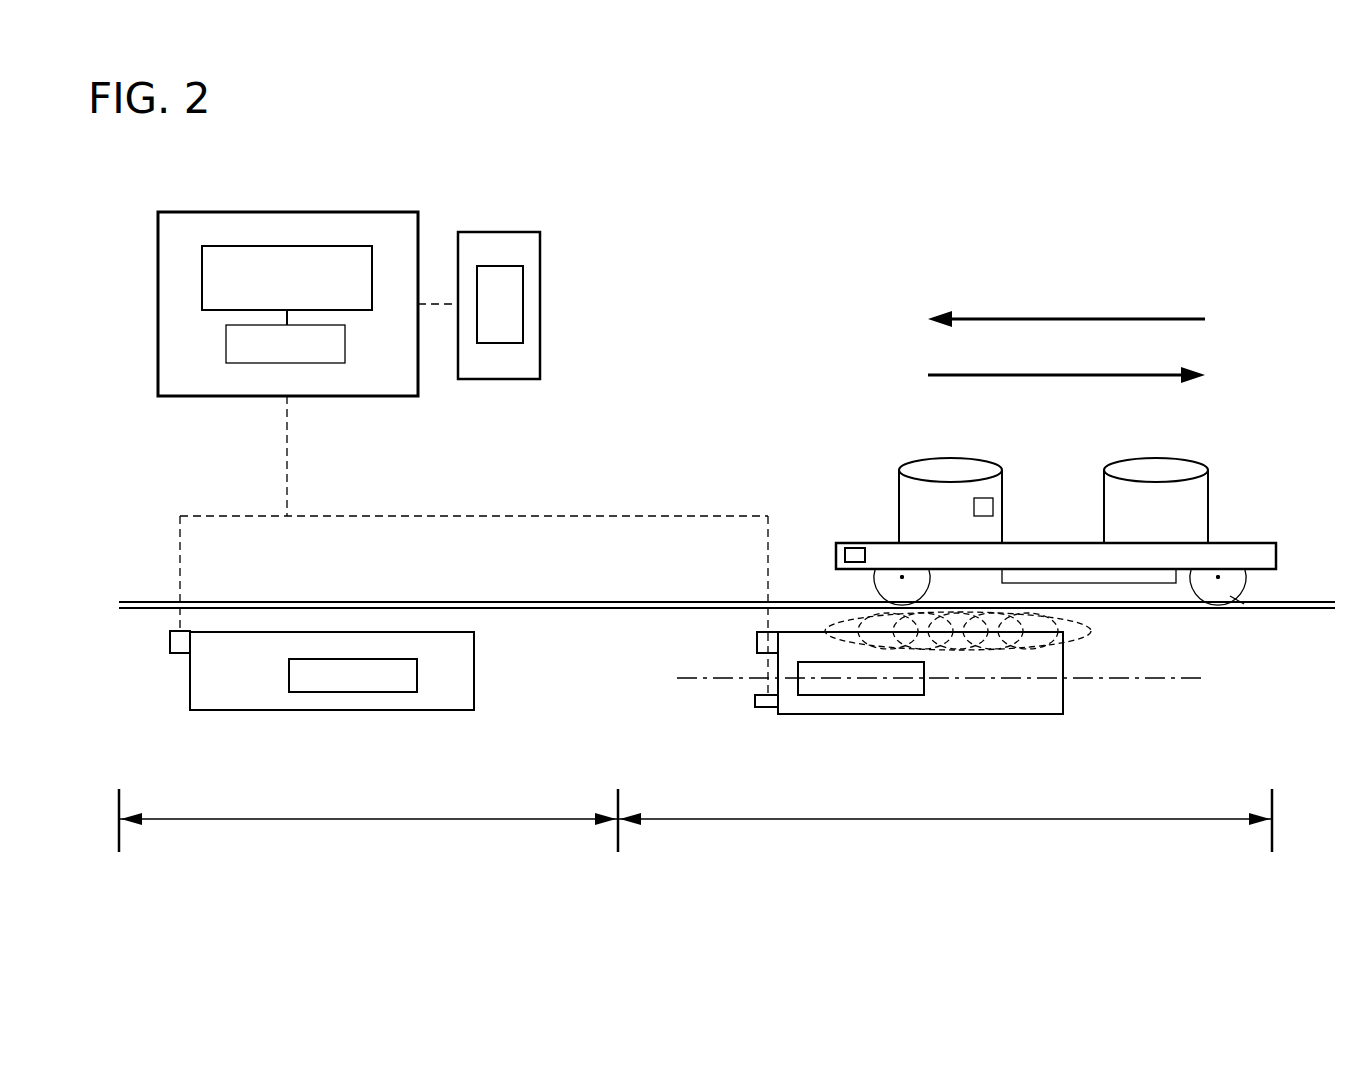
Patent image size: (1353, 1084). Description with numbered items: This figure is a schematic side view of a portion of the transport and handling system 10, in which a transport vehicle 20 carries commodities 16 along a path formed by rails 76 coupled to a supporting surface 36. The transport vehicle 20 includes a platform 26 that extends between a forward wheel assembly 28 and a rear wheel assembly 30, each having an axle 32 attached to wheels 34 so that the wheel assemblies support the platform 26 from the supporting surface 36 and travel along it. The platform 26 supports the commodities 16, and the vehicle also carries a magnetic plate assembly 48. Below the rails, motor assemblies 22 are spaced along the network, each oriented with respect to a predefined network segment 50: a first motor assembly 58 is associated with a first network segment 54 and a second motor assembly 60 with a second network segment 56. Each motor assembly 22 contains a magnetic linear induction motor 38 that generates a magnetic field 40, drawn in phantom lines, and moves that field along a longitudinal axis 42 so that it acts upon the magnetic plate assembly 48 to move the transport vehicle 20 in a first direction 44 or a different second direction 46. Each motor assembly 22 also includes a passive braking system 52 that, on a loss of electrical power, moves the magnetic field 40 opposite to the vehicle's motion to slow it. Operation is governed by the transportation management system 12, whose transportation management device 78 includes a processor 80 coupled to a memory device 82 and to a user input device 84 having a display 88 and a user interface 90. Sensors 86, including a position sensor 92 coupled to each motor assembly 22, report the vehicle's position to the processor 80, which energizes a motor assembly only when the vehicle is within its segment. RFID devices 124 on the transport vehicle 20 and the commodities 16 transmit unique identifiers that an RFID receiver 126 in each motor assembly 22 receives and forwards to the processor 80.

The transport and handling system 10 is at (1054, 188).
The transportation management system 12 is at (499, 174).
The commodities 16 is at (1002, 482).
The transport vehicle 20 is at (1238, 543).
The motor assembly 22 is at (377, 710).
The platform 26 is at (1276, 550).
The forward wheel assembly 28 is at (877, 582).
The rear wheel assembly 30 is at (1246, 580).
The axle 32 is at (904, 578).
The wheels 34 is at (1237, 600).
The supporting surface 36 is at (455, 602).
The magnetic linear induction motor 38 is at (474, 690).
The magnetic field 40 is at (1065, 648).
The longitudinal axis 42 is at (1185, 683).
The first direction 44 is at (1003, 319).
The second direction 46 is at (1003, 375).
The magnetic plate assembly 48 is at (1118, 583).
The predefined network segment 50 is at (348, 819).
The passive braking system 52 is at (310, 692).
The first network segment 54 is at (1060, 819).
The second network segment 56 is at (475, 819).
The first motor assembly 58 is at (903, 714).
The second motor assembly 60 is at (474, 637).
The rails 76 is at (325, 602).
The transportation management device 78 is at (330, 212).
The processor 80 is at (220, 246).
The memory device 82 is at (345, 336).
The user input device 84 is at (540, 232).
The sensors 86 is at (425, 607).
The display 88 is at (540, 270).
The user interface 90 is at (523, 318).
The position sensor 92 is at (172, 655).
The radio frequency identification (RFID) device 124 is at (853, 548).
The RFID receiver 126 is at (760, 707).